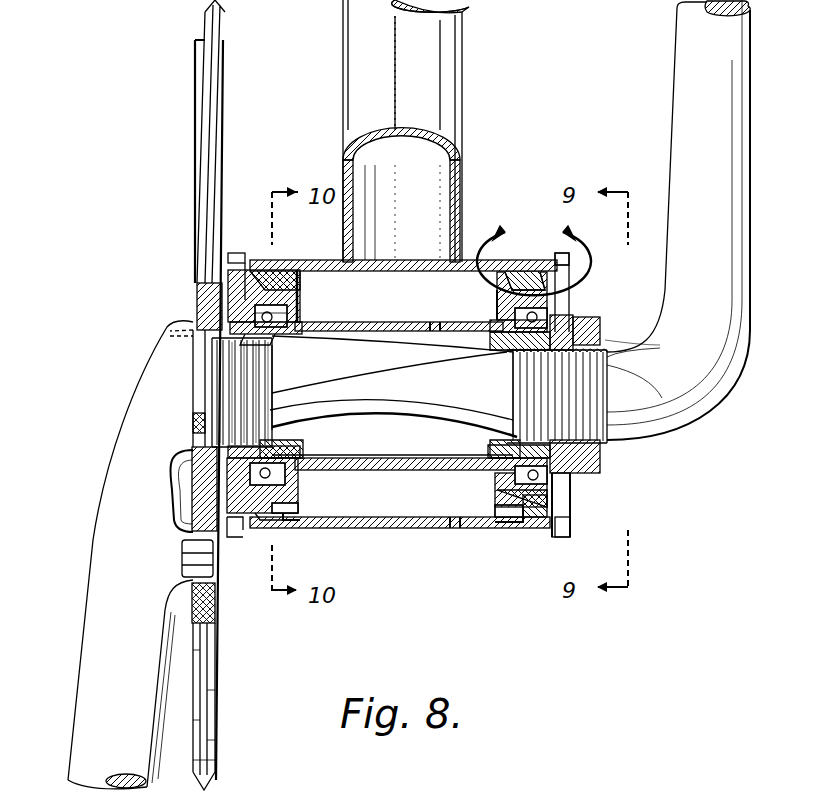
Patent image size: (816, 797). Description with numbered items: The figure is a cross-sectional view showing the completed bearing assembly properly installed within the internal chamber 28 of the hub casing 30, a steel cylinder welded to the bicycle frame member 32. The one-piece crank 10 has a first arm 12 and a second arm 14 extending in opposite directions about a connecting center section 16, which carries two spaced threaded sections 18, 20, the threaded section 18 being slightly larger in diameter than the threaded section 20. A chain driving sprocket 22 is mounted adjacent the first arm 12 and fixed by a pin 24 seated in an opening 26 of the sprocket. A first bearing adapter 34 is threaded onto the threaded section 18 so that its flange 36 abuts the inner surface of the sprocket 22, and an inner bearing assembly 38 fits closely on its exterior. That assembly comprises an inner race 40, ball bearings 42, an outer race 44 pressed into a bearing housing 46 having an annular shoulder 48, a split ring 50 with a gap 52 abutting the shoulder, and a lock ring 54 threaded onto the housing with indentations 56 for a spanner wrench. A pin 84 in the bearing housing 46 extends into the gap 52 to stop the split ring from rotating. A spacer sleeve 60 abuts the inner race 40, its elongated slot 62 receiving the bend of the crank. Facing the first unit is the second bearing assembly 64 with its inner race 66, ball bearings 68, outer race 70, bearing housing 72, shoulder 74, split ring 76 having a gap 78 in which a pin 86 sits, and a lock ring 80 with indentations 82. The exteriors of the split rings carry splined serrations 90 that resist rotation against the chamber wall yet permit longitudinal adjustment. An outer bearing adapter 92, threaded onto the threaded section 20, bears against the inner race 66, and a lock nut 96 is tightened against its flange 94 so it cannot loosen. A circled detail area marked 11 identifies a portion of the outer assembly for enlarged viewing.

The crank 10 is at (692, 425).
The detail view circle 11 is at (534, 260).
The first arm 12 is at (85, 725).
The second arm 14 is at (728, 380).
The connecting center section 16 is at (445, 412).
The threaded section 18 is at (250, 395).
The threaded section 20 is at (590, 405).
The chain driving sprocket 22 is at (228, 50).
The pin 24 is at (215, 575).
The opening 26 is at (214, 620).
The internal chamber 28 is at (427, 528).
The hub casing 30 is at (455, 530).
The frame member 32 is at (475, 48).
The first bearing adapter 34 is at (318, 340).
The flange 36 is at (228, 312).
The inner bearing assembly 38 is at (300, 292).
The inner race 40 is at (300, 478).
The ball bearings 42 is at (200, 300).
The outer race 44 is at (298, 490).
The bearing housing 46 is at (290, 313).
The annular shoulder 48 is at (298, 270).
The split ring 50 is at (282, 265).
The gap 52 is at (275, 522).
The lock ring 54 is at (245, 535).
The indentations 56 is at (240, 258).
The spacer sleeve 60 is at (455, 470).
The elongated slot 62 is at (437, 330).
The second bearing assembly 64 is at (572, 272).
The inner race 66 is at (565, 480).
The ball bearings 68 is at (560, 310).
The outer race 70 is at (565, 496).
The bearing housing 72 is at (562, 296).
The shoulder 74 is at (497, 294).
The split ring 76 is at (492, 320).
The gap 78 is at (530, 518).
The lock ring 80 is at (572, 515).
The indentations 82 is at (573, 255).
The pin 84 is at (292, 510).
The pin 86 is at (510, 520).
The splined serrations 90 is at (285, 515).
The outer bearing adapter 92 is at (620, 345).
The flange 94 is at (602, 325).
The lock nut 96 is at (602, 464).